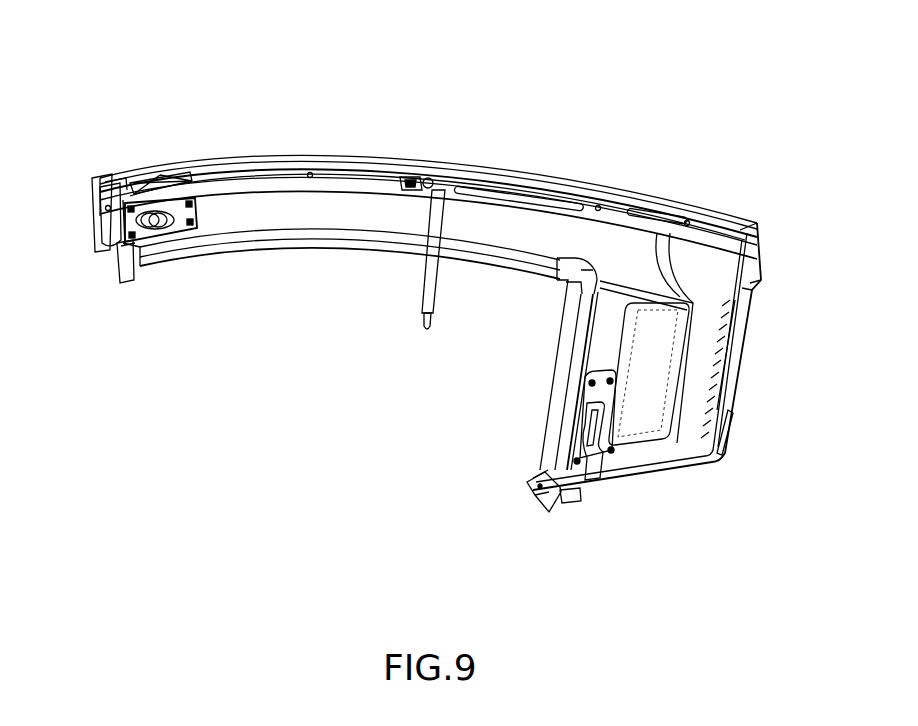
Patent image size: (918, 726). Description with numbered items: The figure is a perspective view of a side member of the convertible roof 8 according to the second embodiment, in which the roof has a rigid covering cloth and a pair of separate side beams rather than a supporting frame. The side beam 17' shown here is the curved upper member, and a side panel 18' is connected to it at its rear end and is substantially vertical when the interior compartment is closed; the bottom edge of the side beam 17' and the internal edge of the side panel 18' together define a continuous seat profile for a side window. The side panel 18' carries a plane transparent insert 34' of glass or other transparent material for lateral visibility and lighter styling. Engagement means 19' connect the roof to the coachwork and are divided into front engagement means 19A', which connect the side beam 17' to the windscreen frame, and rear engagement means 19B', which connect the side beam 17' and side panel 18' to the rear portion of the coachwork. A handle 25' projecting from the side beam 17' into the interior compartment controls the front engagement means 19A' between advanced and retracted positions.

The convertible roof 8 is at (447, 317).
The side beam 17' is at (428, 181).
The side panel 18' is at (692, 356).
The engagement means 19' is at (344, 349).
The front engagement means 19A' is at (91, 186).
The rear engagement means 19B' is at (523, 535).
The handle 25' is at (189, 268).
The plane transparent insert 34' is at (651, 455).